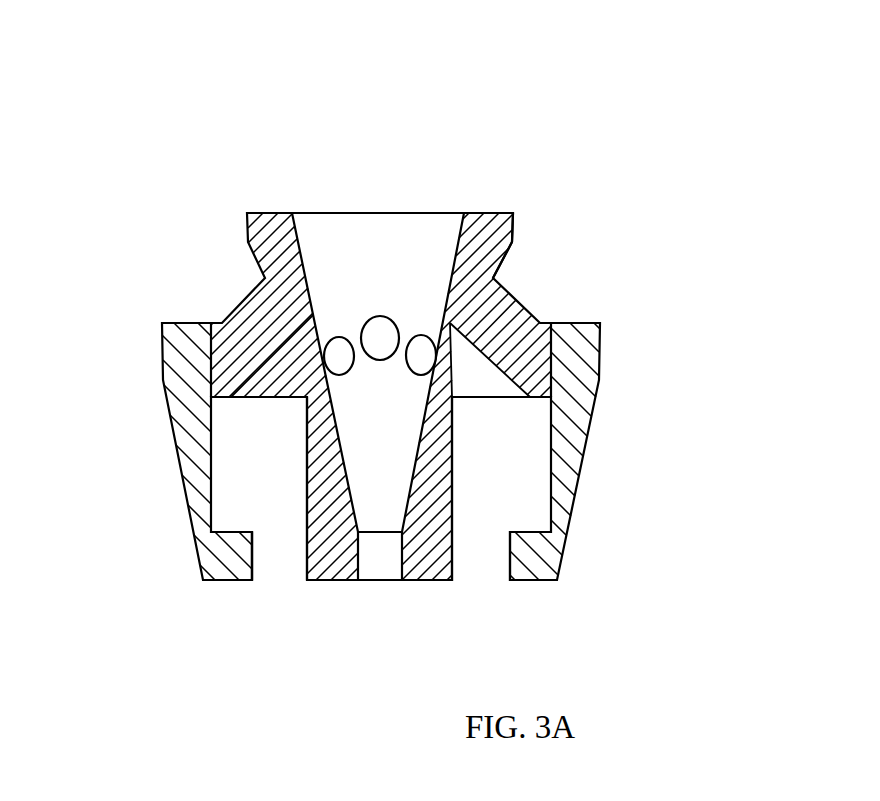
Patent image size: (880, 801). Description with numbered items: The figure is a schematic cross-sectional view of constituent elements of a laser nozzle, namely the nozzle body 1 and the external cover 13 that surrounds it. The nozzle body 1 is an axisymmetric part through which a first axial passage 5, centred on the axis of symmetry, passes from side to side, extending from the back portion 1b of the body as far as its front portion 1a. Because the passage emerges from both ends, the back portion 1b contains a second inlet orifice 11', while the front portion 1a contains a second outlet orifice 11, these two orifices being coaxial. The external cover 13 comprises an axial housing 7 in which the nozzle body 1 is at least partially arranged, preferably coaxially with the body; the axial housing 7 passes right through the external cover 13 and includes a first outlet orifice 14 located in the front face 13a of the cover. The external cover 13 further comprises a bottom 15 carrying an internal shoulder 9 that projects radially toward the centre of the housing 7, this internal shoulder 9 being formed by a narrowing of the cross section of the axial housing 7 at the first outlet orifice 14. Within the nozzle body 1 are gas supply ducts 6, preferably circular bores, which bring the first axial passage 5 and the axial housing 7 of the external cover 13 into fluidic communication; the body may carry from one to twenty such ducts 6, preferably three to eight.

The nozzle body 1 is at (497, 327).
The front portion 1a is at (427, 550).
The back portion 1b is at (487, 233).
The first axial passage 5 is at (385, 268).
The gas supply duct 6 is at (380, 340).
The axial housing 7 is at (279, 457).
The internal shoulder 9 is at (238, 527).
The second outlet orifice 11 is at (356, 613).
The second inlet orifice 11' is at (380, 134).
The external cover 13 is at (568, 382).
The front face 13a is at (230, 567).
The first outlet orifice 14 is at (281, 570).
The bottom 15 is at (533, 552).